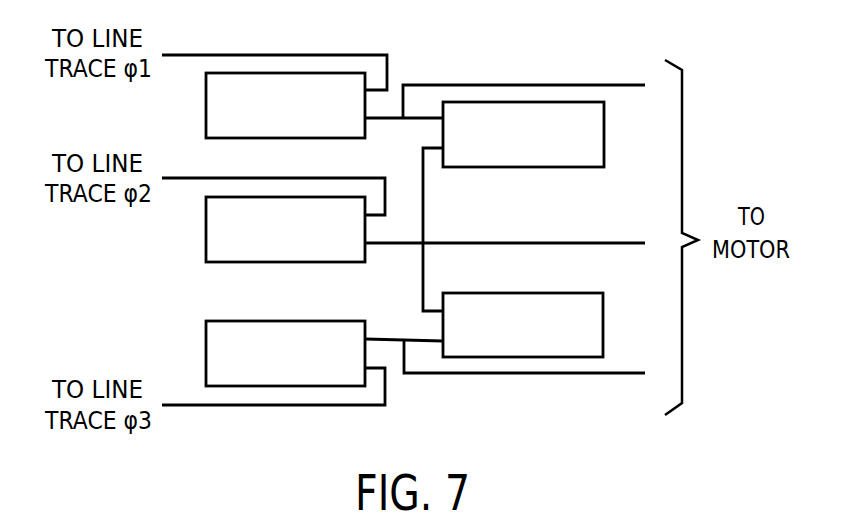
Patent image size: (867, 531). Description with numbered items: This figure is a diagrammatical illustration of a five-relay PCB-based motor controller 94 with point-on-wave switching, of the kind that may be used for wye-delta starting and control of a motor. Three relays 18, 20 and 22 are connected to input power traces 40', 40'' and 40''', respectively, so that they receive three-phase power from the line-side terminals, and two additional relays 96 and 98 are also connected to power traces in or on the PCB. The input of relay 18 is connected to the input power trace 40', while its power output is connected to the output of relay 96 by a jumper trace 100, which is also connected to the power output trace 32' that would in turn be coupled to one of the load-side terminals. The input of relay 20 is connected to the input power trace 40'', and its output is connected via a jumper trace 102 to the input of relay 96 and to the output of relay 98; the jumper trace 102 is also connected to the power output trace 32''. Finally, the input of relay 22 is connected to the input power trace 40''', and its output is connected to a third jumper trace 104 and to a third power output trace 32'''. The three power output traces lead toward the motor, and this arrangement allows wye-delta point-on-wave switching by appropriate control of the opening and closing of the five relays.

The relay 18 is at (277, 98).
The relay 20 is at (253, 245).
The relay 22 is at (282, 360).
The power output trace 32' is at (524, 64).
The power output trace 32'' is at (505, 223).
The power output trace 32''' is at (524, 394).
The power trace 40' is at (274, 57).
The power trace 40'' is at (273, 181).
The power trace 40''' is at (284, 410).
The PCB-based motor controller 94 is at (208, 463).
The relay 96 is at (517, 117).
The relay 98 is at (533, 340).
The jumper trace 100 is at (385, 120).
The jumper trace 102 is at (423, 205).
The jumper trace 104 is at (387, 338).